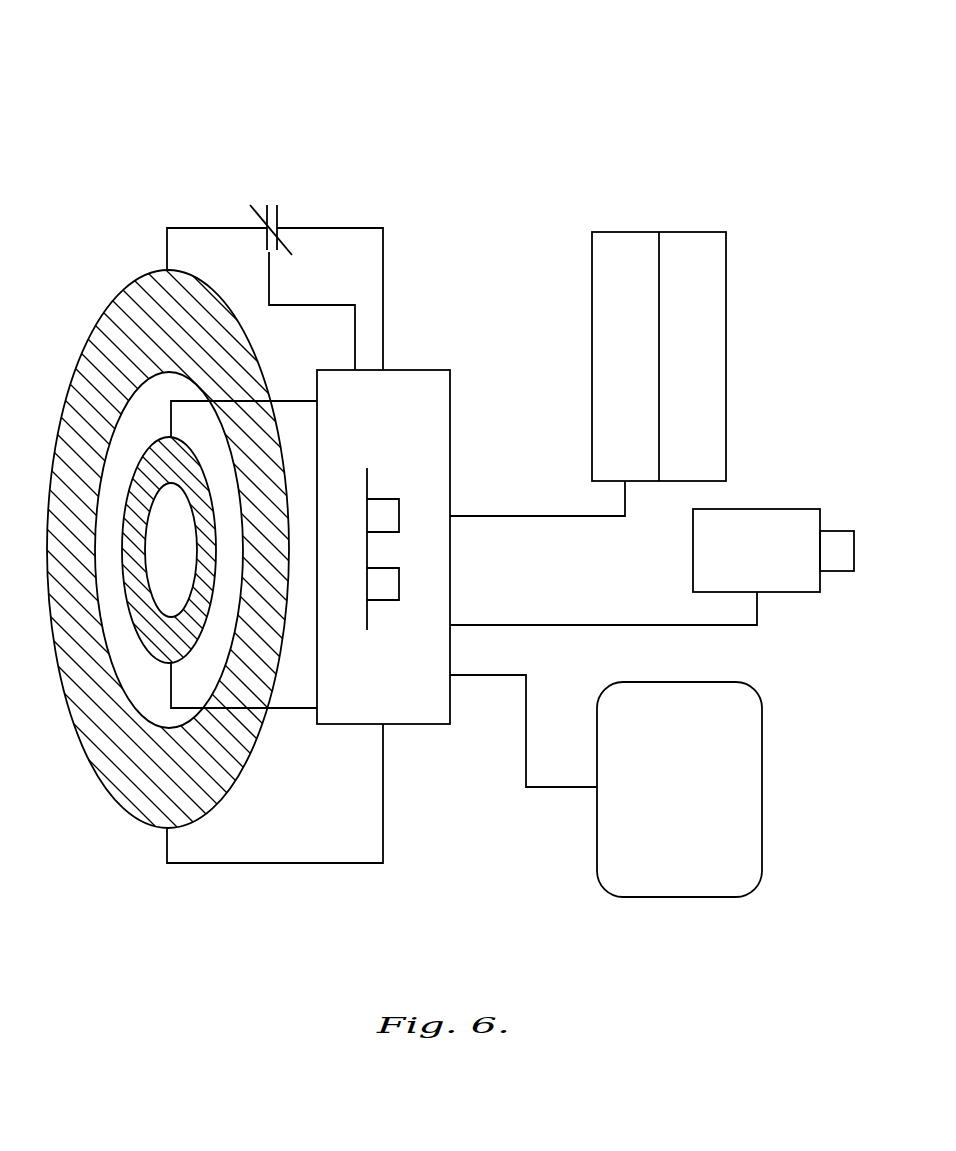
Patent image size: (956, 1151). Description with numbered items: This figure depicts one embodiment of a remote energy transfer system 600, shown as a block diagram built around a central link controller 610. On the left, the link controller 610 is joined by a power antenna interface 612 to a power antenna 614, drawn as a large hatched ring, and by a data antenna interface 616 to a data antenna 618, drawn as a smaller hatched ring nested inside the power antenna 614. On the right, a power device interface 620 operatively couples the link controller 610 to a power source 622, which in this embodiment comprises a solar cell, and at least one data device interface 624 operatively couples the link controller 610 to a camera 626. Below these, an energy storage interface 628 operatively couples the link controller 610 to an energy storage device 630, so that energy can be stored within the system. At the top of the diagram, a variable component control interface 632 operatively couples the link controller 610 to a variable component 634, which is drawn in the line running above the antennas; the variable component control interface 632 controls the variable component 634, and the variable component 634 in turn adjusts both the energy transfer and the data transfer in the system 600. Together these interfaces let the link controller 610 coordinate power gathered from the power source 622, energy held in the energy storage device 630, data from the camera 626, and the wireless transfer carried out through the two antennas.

The remote energy transfer system 600 is at (657, 107).
The link controller 610 is at (422, 727).
The power antenna interface 612 is at (383, 818).
The power antenna 614 is at (138, 797).
The data antenna interface 616 is at (285, 710).
The data antenna 618 is at (160, 637).
The power device interface 620 is at (483, 516).
The power source 622 is at (690, 232).
The data device interface 624 is at (510, 625).
The camera 626 is at (754, 509).
The energy storage interface 628 is at (505, 674).
The energy storage device 630 is at (713, 897).
The variable component control interface 632 is at (305, 305).
The variable component 634 is at (252, 207).